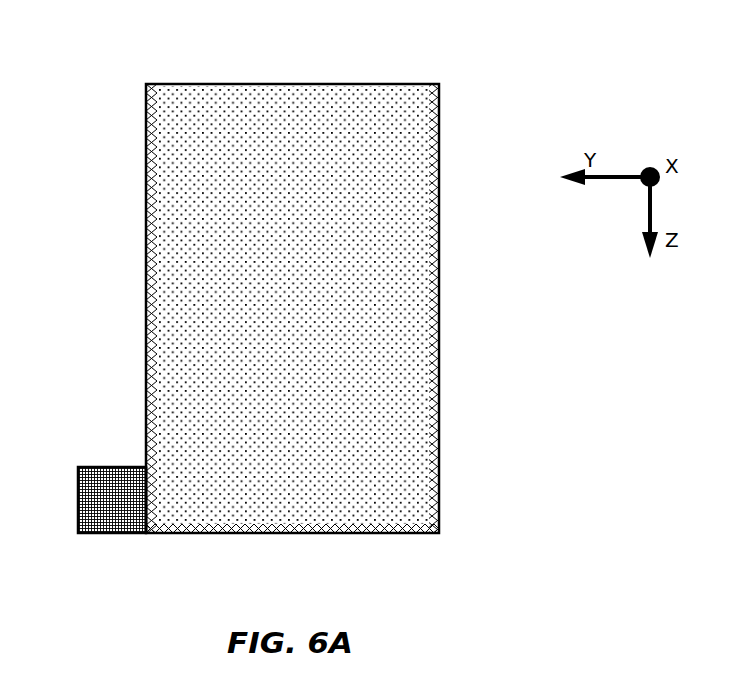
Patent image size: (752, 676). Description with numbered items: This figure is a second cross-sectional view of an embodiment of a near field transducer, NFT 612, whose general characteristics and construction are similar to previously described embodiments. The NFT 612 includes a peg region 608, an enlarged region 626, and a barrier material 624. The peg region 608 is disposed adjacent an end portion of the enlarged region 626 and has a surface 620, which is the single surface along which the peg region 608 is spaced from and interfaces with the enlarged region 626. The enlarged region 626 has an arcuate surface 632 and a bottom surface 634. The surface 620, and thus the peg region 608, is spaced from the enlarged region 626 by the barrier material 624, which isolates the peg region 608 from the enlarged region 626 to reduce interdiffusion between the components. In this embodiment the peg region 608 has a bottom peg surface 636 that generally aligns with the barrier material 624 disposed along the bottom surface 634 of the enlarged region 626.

The near field transducer 612 is at (475, 127).
The enlarged region 626 is at (177, 142).
The arcuate surface 632 is at (150, 250).
The barrier material 624 is at (435, 282).
The bottom surface 634 is at (330, 523).
The surface 620 is at (145, 498).
The bottom peg surface 636 is at (110, 533).
The peg region 608 is at (80, 540).